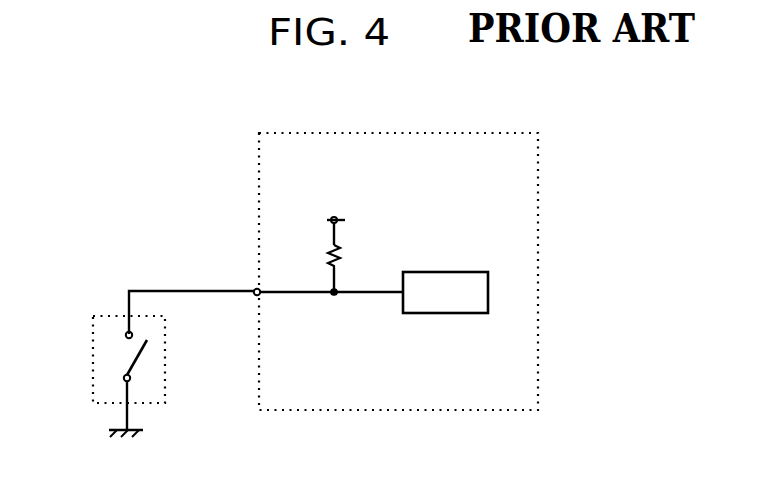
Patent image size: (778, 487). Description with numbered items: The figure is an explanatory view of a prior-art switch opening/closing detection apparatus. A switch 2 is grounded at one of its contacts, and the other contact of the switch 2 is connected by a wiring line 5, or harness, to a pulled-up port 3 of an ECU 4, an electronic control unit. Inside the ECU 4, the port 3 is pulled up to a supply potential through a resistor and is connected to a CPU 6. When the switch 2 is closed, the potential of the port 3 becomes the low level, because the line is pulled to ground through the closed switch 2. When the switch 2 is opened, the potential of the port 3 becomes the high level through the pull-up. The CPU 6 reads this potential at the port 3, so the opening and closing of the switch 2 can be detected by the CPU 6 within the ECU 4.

The switch 2 is at (93, 358).
The port 3 is at (254, 290).
The ECU 4 is at (510, 133).
The wiring line 5 is at (147, 291).
The CPU 6 is at (466, 272).